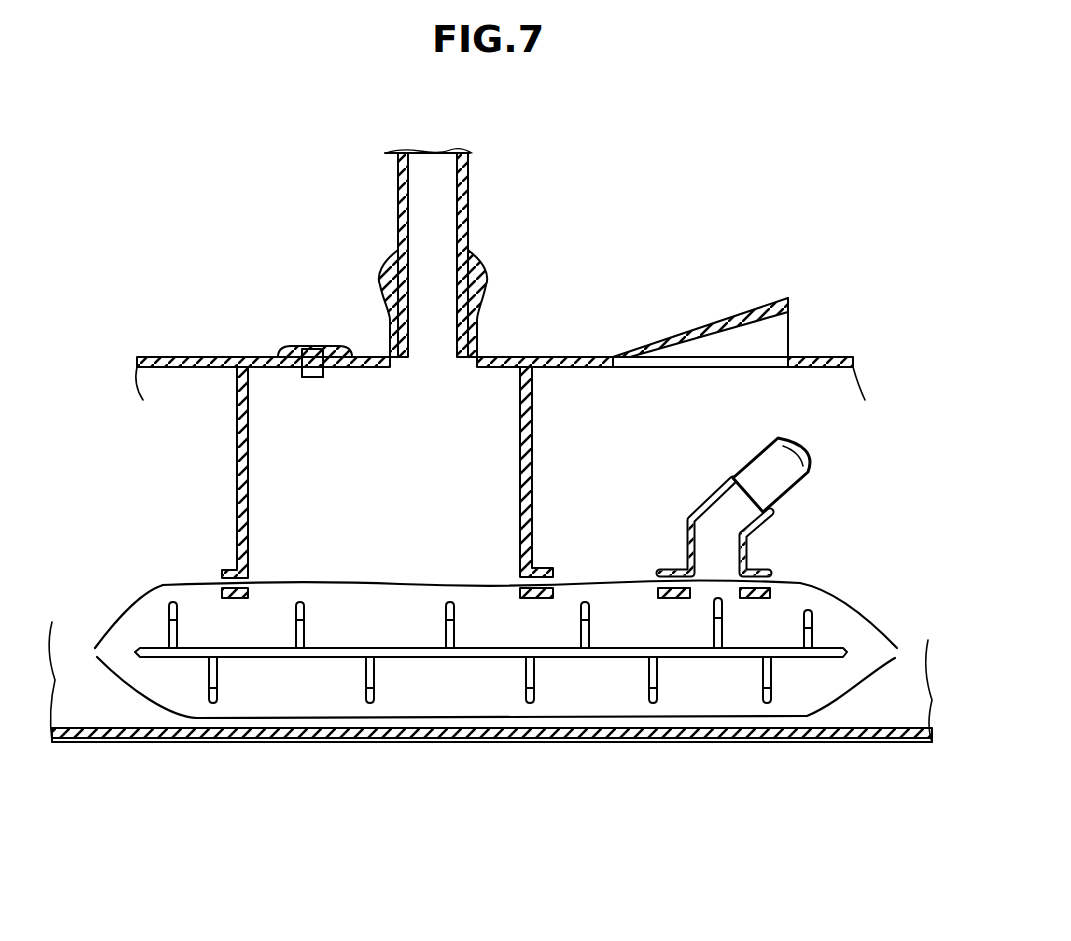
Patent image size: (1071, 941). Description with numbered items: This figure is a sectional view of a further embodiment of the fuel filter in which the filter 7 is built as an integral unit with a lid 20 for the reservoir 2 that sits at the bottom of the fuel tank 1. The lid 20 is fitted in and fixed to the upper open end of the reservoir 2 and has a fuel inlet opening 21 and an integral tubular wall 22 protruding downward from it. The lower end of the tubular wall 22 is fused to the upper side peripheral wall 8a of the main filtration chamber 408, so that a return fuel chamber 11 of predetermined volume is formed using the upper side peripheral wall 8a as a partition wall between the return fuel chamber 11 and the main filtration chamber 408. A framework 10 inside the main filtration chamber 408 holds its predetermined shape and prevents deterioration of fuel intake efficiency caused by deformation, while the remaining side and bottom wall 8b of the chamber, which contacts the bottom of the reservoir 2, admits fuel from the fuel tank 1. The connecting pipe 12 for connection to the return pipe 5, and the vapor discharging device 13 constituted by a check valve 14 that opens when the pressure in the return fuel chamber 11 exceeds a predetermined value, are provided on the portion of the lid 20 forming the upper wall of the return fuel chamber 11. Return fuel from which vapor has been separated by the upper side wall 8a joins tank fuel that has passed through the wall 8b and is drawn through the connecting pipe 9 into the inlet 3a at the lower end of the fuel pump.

The fuel tank 1 is at (115, 742).
The reservoir 2 is at (152, 728).
The inlet 3a is at (758, 462).
The return pipe 5 is at (468, 192).
The filter 7 is at (776, 564).
The upper side peripheral wall 8a is at (275, 583).
The remaining peripheral wall 8b is at (285, 715).
The connecting pipe 9 is at (688, 515).
The framework 10 is at (412, 648).
The return fuel chamber 11 is at (385, 478).
The connecting pipe 12 is at (470, 284).
The vapor discharging device 13 is at (307, 344).
The check valve 14 is at (312, 372).
The lid 20 is at (170, 357).
The fuel inlet opening 21 is at (780, 336).
The tubular wall 22 is at (237, 455).
The main filtration chamber 408 is at (338, 580).